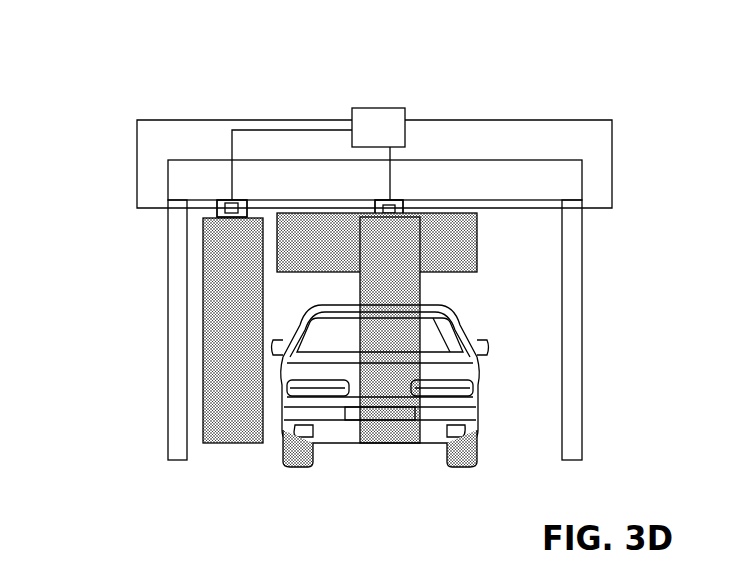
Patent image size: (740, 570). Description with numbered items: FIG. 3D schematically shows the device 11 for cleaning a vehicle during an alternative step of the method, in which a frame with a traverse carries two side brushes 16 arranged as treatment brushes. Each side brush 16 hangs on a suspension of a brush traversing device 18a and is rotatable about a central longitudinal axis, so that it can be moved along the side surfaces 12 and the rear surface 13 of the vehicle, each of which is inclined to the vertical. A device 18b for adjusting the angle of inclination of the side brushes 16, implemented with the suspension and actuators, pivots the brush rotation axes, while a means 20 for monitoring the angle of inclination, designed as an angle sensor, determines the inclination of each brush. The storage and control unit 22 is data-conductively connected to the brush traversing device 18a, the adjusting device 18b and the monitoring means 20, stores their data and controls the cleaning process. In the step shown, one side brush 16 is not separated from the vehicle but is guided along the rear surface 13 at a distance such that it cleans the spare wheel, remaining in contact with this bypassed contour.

The device 11 is at (115, 98).
The side surface 12 is at (305, 338).
The rear surface 13 is at (433, 332).
The side brush 16 is at (203, 298).
The brush traversing device 18a is at (218, 202).
The device for adjusting the angle of inclination 18b is at (402, 203).
The means for monitoring the angle of inclination 20 is at (217, 210).
The storage and control unit 22 is at (370, 108).